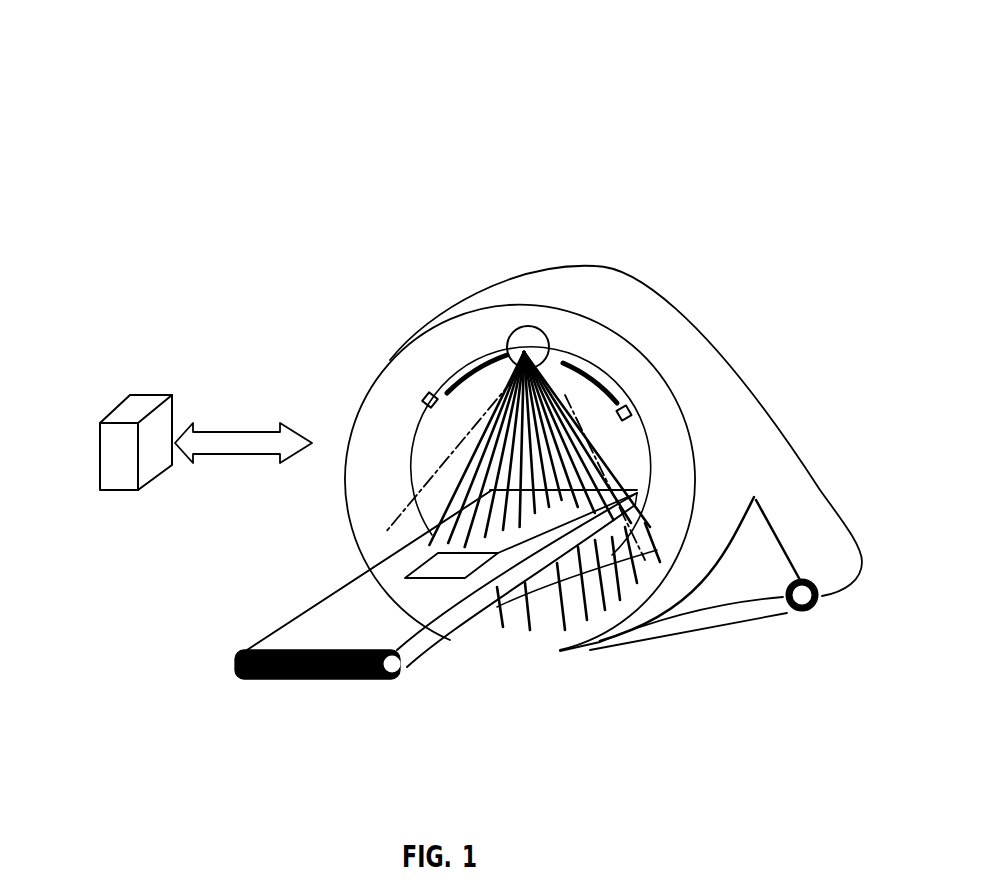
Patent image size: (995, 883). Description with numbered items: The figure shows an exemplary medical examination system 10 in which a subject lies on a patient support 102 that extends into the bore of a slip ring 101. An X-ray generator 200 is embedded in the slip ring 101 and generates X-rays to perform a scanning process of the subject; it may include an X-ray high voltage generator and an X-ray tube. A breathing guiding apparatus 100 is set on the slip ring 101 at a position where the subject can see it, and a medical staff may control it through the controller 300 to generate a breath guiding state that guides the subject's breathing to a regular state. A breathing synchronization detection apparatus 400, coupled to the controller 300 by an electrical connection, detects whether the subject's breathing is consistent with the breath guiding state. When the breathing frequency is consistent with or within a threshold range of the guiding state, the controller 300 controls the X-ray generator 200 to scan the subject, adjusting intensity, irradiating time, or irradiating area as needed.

The medical examination system 10 is at (73, 53).
The slip ring 101 is at (668, 498).
The patient support 102 is at (378, 598).
The X-ray generator 200 is at (534, 327).
The breathing guiding apparatus 100 is at (462, 363).
The breathing synchronization detection apparatus 400 is at (428, 397).
The controller 300 is at (127, 447).